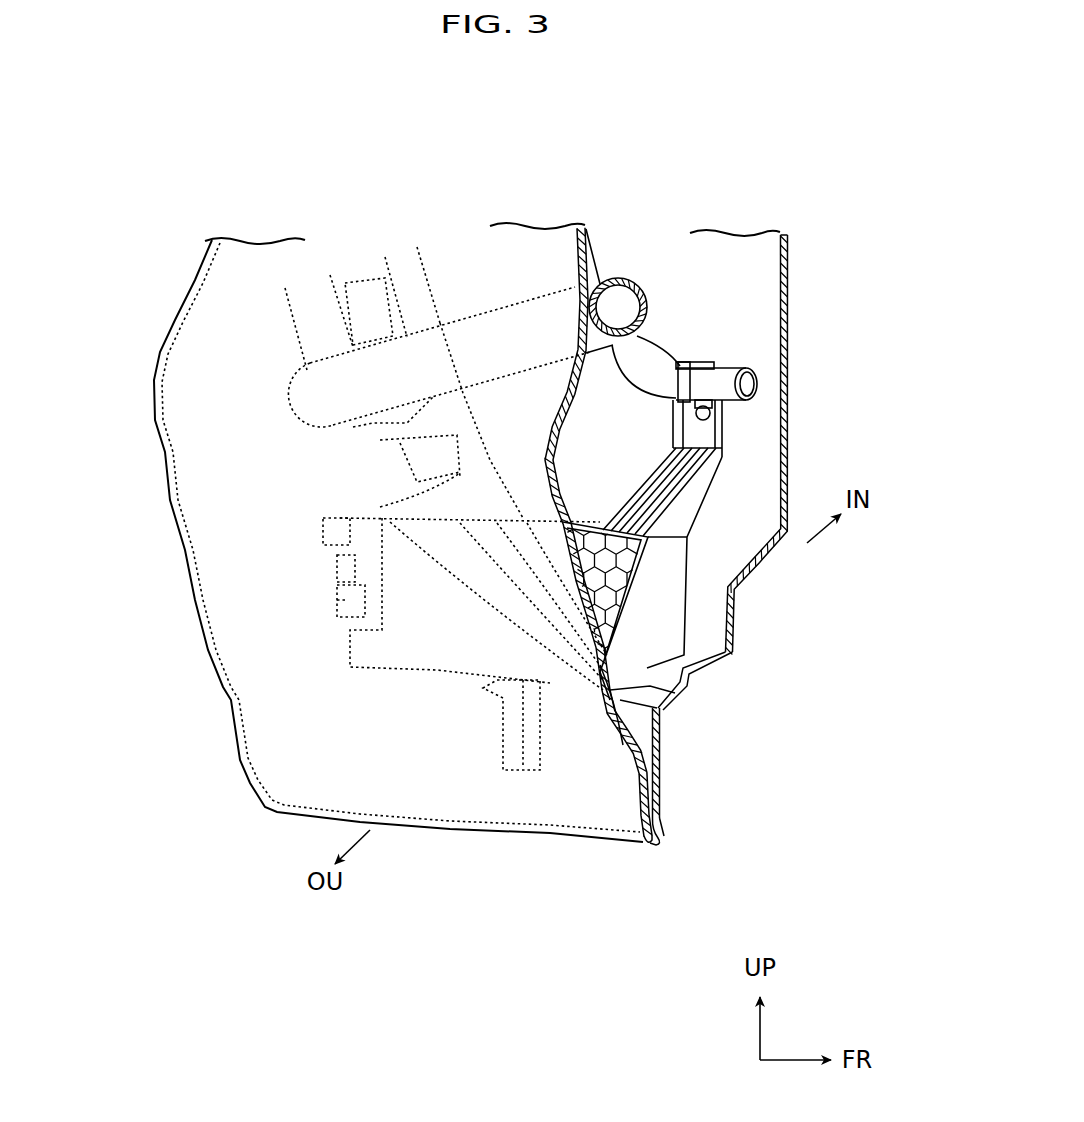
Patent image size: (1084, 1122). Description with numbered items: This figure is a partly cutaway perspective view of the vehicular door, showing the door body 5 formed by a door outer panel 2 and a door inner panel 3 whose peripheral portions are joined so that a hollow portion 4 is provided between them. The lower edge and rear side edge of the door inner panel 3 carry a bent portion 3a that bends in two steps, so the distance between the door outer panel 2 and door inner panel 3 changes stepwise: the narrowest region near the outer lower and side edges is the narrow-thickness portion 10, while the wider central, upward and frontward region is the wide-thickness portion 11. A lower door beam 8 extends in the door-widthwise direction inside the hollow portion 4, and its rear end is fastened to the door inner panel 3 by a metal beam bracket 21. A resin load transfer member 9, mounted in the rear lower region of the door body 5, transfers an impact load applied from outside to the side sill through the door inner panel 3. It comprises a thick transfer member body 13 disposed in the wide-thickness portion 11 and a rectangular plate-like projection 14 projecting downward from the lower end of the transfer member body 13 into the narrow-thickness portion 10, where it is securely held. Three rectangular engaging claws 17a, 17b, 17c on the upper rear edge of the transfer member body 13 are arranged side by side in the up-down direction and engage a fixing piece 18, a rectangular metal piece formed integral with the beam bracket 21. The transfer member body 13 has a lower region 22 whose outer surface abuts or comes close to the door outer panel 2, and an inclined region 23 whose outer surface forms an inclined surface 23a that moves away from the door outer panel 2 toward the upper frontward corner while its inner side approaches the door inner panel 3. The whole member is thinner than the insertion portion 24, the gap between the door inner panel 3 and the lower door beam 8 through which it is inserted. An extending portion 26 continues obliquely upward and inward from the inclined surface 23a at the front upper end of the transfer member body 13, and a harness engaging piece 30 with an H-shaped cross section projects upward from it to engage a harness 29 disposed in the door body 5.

The door outer panel 2 is at (574, 253).
The door inner panel 3 is at (790, 275).
The bent portion 3a is at (673, 683).
The hollow portion 4 is at (767, 415).
The door body 5 is at (790, 247).
The lower door beam 8 is at (594, 283).
The load transfer member 9 is at (700, 553).
The narrow-thickness portion 10 is at (662, 770).
The wide-thickness portion 11 is at (560, 463).
The transfer member body 13 is at (437, 667).
The projection 14 is at (503, 760).
The engaging claw 17a is at (320, 528).
The engaging claw 17b is at (337, 573).
The engaging claw 17c is at (337, 600).
The fixing piece 18 is at (355, 563).
The beam bracket 21 is at (370, 433).
The lower region 22 is at (623, 745).
The inclined region 23 is at (638, 568).
The inclined surface 23a is at (620, 597).
The insertion portion 24 is at (727, 257).
The extending portion 26 is at (725, 458).
The harness 29 is at (735, 372).
The harness engaging piece 30 is at (698, 364).